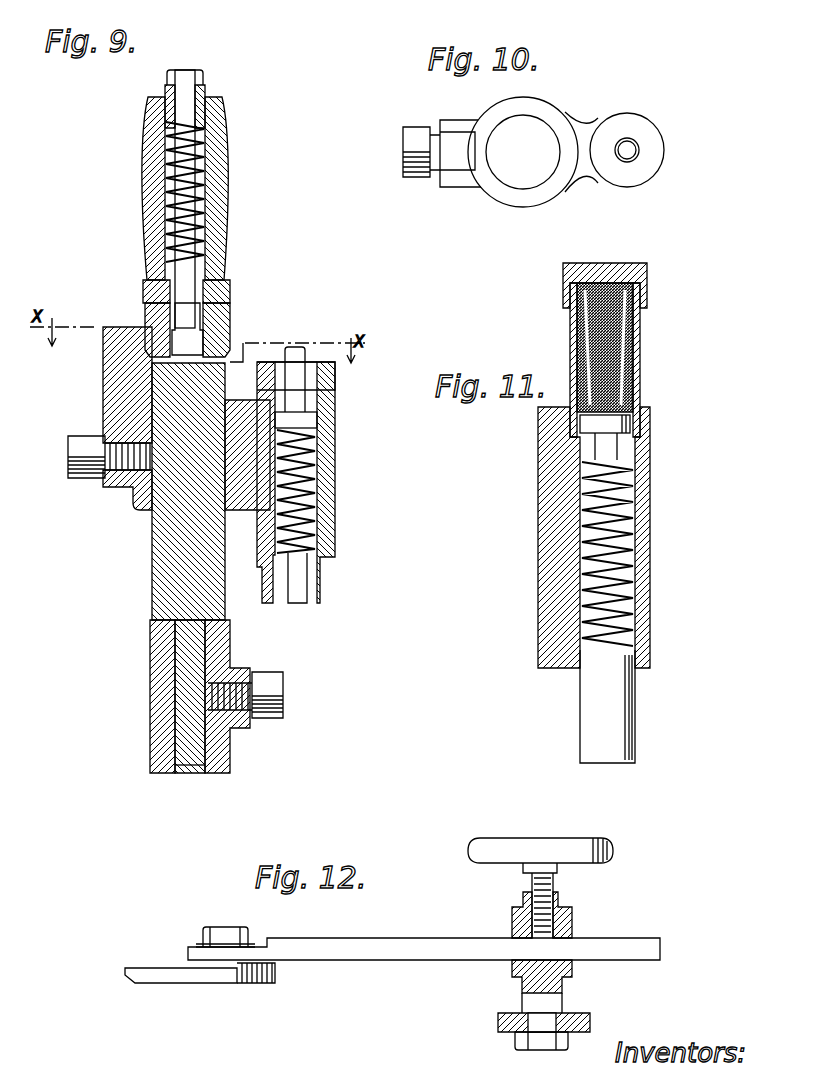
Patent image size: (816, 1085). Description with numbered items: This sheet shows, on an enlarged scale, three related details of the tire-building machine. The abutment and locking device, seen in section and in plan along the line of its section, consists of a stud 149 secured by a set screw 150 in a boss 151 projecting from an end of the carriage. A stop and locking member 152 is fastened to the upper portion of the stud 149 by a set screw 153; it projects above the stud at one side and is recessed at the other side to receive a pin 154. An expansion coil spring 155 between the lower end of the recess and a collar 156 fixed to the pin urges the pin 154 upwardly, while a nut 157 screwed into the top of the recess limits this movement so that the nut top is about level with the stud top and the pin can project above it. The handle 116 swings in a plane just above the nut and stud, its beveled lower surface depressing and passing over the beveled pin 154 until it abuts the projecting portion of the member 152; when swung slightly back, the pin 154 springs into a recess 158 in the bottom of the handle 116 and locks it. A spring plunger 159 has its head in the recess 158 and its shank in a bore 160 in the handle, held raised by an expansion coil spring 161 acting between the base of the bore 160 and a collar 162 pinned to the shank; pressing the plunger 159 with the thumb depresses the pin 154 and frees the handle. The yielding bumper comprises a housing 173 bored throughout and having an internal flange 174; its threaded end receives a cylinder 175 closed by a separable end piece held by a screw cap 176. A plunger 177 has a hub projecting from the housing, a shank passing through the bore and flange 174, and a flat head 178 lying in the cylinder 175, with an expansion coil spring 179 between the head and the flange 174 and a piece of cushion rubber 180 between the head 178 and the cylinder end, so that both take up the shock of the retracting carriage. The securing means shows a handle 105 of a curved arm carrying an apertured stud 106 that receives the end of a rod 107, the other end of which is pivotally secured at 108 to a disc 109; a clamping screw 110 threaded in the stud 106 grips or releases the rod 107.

In FIG. 12, the handle 105 is at (591, 1022).
In FIG. 12, the apertured stud 106 is at (573, 922).
In FIG. 12, the rod 107 is at (640, 942).
In FIG. 12, the pivot 108 is at (225, 935).
In FIG. 12, the disc 109 is at (252, 981).
In FIG. 12, the clamping screw 110 is at (578, 846).
In FIG. 9, the handle 116 is at (226, 315).
In FIG. 9, the stud 149 is at (166, 578).
In FIG. 10, the stud 149 is at (540, 140).
In FIG. 9, the set screw 150 is at (272, 683).
In FIG. 9, the boss 151 is at (226, 752).
In FIG. 9, the stop and locking member 152 is at (136, 503).
In FIG. 10, the stop and locking member 152 is at (482, 180).
In FIG. 9, the set screw 153 is at (70, 440).
In FIG. 10, the set screw 153 is at (410, 136).
In FIG. 9, the pin 154 is at (297, 360).
In FIG. 10, the pin 154 is at (630, 145).
In FIG. 9, the expansion coil spring 155 is at (336, 455).
In FIG. 9, the collar 156 is at (300, 420).
In FIG. 9, the nut 157 is at (336, 374).
In FIG. 10, the nut 157 is at (662, 140).
In FIG. 9, the recess 158 is at (205, 344).
In FIG. 9, the spring plunger 159 is at (222, 285).
In FIG. 9, the bore 160 is at (206, 132).
In FIG. 9, the expansion coil spring 161 is at (149, 150).
In FIG. 9, the collar 162 is at (204, 74).
In FIG. 11, the housing 173 is at (651, 531).
In FIG. 11, the internal flange 174 is at (625, 452).
In FIG. 11, the cylinder 175 is at (641, 365).
In FIG. 11, the screw cap 176 is at (645, 263).
In FIG. 11, the plunger 177 is at (592, 706).
In FIG. 11, the flat head 178 is at (612, 425).
In FIG. 11, the expansion coil spring 179 is at (590, 545).
In FIG. 11, the cushion rubber 180 is at (641, 332).